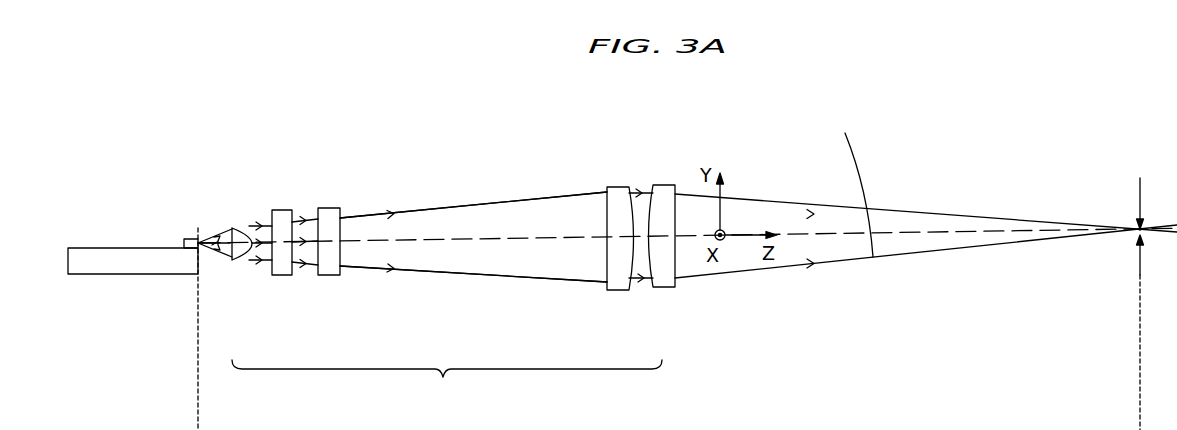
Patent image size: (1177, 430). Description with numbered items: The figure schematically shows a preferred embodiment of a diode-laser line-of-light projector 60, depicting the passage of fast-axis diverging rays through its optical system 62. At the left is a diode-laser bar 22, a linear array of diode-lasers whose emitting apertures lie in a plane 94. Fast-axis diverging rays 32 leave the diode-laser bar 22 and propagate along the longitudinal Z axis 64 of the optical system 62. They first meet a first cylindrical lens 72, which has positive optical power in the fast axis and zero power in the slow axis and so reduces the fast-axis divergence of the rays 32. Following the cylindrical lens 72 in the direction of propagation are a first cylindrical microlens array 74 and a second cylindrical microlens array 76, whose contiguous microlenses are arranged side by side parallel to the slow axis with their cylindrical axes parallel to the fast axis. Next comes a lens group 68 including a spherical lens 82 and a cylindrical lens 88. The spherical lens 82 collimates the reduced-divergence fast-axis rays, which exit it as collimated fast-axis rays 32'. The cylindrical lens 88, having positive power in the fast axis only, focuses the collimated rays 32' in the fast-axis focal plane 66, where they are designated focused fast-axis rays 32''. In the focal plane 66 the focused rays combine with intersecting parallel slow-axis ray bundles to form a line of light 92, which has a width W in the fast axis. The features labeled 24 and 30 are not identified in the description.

The diode-laser line-of-light projector 60 is at (760, 132).
The optical fiber 24 is at (123, 247).
The diode-laser bar 22 is at (178, 233).
The light source 30 is at (207, 235).
The fast-axis diverging rays 32 is at (235, 241).
The first cylindrical lens 72 is at (240, 256).
The first cylindrical microlens array 74 is at (282, 287).
The second cylindrical microlens array 76 is at (331, 204).
The longitudinal (Z) axis 64 is at (446, 241).
The optical system 62 is at (447, 384).
The spherical lens 82 is at (617, 200).
The collimated fast-axis rays 32' is at (641, 236).
The cylindrical lens 88 is at (667, 185).
The lens group 68 is at (678, 300).
The focused fast-axis rays 32'' is at (926, 193).
The line of light 92 is at (1135, 226).
The width W is at (1142, 216).
The fast-axis focal plane 66 is at (1138, 325).
The plane 94 is at (198, 402).